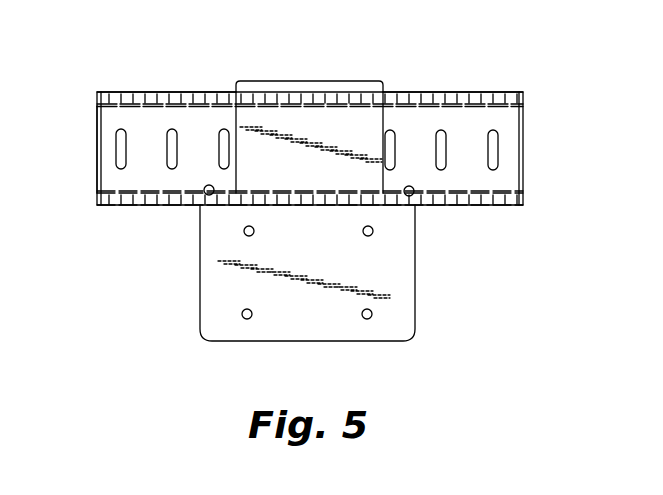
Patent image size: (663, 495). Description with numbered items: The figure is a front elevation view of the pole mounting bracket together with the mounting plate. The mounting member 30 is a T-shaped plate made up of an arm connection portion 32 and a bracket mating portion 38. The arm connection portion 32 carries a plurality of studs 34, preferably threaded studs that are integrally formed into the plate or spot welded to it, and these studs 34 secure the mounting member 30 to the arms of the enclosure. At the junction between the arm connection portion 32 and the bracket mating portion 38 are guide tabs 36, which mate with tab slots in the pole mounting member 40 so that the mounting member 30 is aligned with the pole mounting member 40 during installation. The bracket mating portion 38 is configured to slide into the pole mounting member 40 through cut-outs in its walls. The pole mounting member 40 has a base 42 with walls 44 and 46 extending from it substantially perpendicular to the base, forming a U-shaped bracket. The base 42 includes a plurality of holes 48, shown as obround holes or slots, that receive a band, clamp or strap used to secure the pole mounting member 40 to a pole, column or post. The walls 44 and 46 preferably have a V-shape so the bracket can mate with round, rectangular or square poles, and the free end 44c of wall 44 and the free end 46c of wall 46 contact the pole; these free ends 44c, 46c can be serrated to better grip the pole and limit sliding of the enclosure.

The mounting member 30 is at (267, 80).
The arm connection portion 32 is at (210, 281).
The studs 34 is at (240, 317).
The guide tabs 36 is at (206, 196).
The bracket mating portion 38 is at (298, 88).
The pole mounting member 40 is at (175, 92).
The base 42 is at (97, 147).
The wall 44 is at (503, 206).
The free end of wall 44 44c is at (134, 206).
The wall 46 is at (117, 92).
The free end of wall 46 46c is at (455, 92).
The holes 48 is at (118, 150).